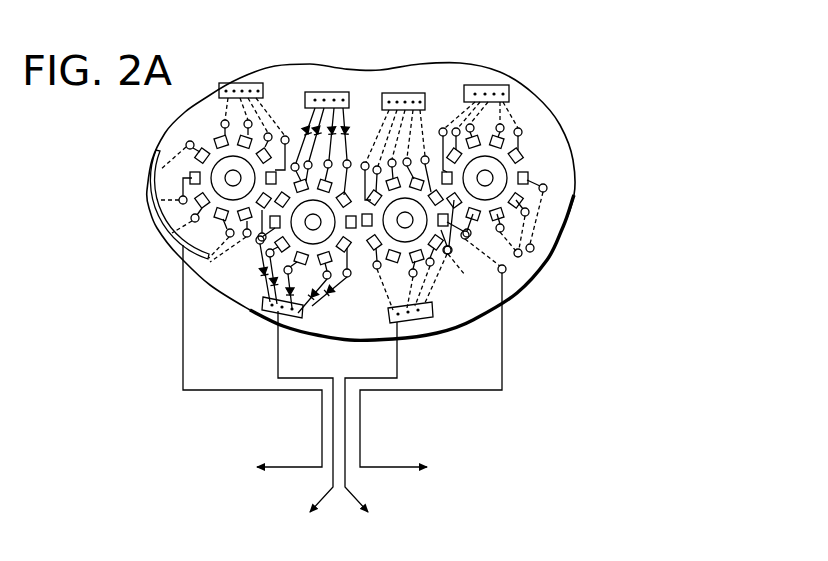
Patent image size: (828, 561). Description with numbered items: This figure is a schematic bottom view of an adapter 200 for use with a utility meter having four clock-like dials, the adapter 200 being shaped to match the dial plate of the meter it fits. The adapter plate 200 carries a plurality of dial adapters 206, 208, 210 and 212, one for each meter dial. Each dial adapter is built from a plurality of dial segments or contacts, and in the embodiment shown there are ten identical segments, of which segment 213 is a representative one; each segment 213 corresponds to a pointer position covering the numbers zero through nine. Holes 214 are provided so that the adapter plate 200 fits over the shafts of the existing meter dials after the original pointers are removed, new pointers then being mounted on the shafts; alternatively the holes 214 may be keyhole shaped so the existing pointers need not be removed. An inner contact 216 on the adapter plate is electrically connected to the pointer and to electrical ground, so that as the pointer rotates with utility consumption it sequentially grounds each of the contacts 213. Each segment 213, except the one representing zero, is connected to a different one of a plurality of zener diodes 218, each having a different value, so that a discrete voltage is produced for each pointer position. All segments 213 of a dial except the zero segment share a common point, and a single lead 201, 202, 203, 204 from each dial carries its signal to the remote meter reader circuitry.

The adapter 200 is at (570, 205).
The lead 201 is at (252, 362).
The lead 202 is at (305, 425).
The lead 203 is at (372, 431).
The lead 204 is at (431, 376).
The dial adapter 206 is at (202, 135).
The dial adapter 208 is at (339, 163).
The dial adapter 210 is at (423, 168).
The dial adapter 212 is at (540, 146).
The dial segment 213 is at (212, 223).
The hole 214 is at (308, 228).
The inner contact 216 is at (500, 195).
The zener diode 218 is at (354, 86).